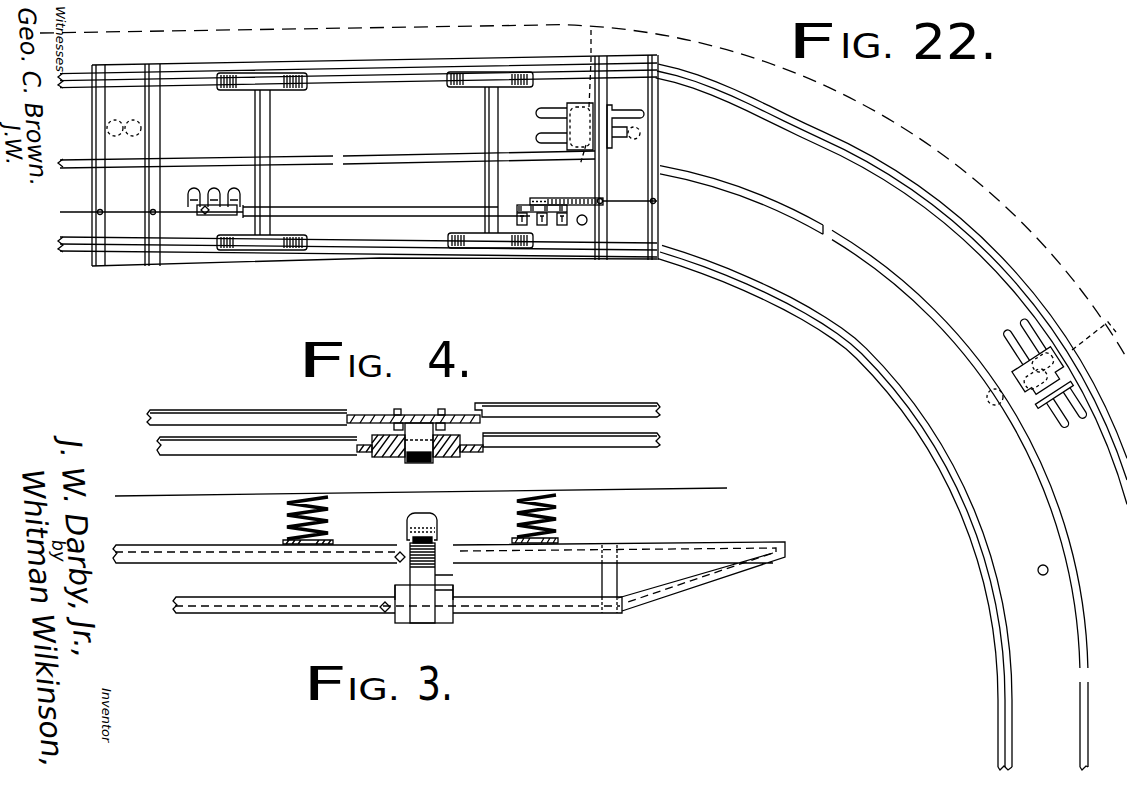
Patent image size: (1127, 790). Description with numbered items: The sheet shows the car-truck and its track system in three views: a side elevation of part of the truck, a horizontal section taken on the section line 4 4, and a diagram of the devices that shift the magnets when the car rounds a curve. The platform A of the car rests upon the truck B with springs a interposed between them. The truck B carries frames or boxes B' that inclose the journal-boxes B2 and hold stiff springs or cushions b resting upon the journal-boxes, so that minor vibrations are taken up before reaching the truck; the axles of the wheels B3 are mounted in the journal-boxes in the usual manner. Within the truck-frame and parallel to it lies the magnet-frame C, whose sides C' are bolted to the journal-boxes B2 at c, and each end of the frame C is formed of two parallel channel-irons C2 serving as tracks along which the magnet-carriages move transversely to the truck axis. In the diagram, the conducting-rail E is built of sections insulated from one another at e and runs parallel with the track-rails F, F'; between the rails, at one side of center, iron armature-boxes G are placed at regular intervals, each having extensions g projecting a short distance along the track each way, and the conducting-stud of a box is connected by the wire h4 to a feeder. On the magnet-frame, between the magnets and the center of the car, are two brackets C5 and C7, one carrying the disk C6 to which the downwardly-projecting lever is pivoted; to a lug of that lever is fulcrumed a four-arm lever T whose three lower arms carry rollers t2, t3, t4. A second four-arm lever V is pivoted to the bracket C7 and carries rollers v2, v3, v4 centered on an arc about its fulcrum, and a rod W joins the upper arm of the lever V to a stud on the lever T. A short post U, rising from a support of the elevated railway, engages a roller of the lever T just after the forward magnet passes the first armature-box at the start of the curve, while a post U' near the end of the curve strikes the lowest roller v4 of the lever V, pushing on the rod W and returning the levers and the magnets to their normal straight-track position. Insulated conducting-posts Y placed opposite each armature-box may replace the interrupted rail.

In FIG. 3, the platform of the car A is at (421, 480).
In FIG. 4, the truck B is at (408, 454).
In FIG. 3, the truck B is at (449, 565).
In FIG. 4, the frames or boxes B' is at (458, 460).
In FIG. 3, the frames or boxes B' is at (468, 577).
In FIG. 4, the journal-boxes B2 is at (408, 458).
In FIG. 3, the journal-boxes B2 is at (420, 582).
In FIG. 22, the wheels B3 is at (458, 88).
In FIG. 22, the magnet-frame C is at (376, 192).
In FIG. 4, the sides of the magnet-frame C' is at (403, 401).
In FIG. 3, the sides of the magnet-frame C' is at (370, 530).
In FIG. 22, the channel-irons C2 is at (147, 193).
In FIG. 22, the bracket C5 is at (584, 198).
In FIG. 22, the disk C6 is at (536, 198).
In FIG. 22, the bracket C7 is at (170, 210).
In FIG. 22, the conducting-rail E is at (747, 200).
In FIG. 22, the insulation between rail sections e is at (338, 162).
In FIG. 22, the track-rails F is at (536, 503).
In FIG. 22, the outer track rail F' is at (593, 283).
In FIG. 22, the armature-boxes G is at (565, 131).
In FIG. 22, the extensions of armature-box g is at (547, 117).
In FIG. 22, the wire h4 is at (838, 200).
In FIG. 22, the four-arm lever T is at (520, 205).
In FIG. 22, the roller t2 is at (542, 226).
In FIG. 22, the roller t3 is at (562, 226).
In FIG. 22, the roller t4 is at (522, 226).
In FIG. 22, the short post U is at (595, 256).
In FIG. 22, the post U' is at (1038, 588).
In FIG. 22, the four-arm lever V is at (200, 208).
In FIG. 22, the rod W is at (386, 198).
In FIG. 22, the insulated conducting-posts Y is at (987, 398).
In FIG. 3, the springs a is at (287, 519).
In FIG. 3, the stiff springs or cushions b is at (440, 522).
In FIG. 4, the bolting point c is at (439, 409).
In FIG. 22, the roller v2 is at (214, 190).
In FIG. 22, the roller v3 is at (235, 190).
In FIG. 22, the roller v4 is at (193, 190).
In FIG. 3, the section line 4 is at (360, 546).